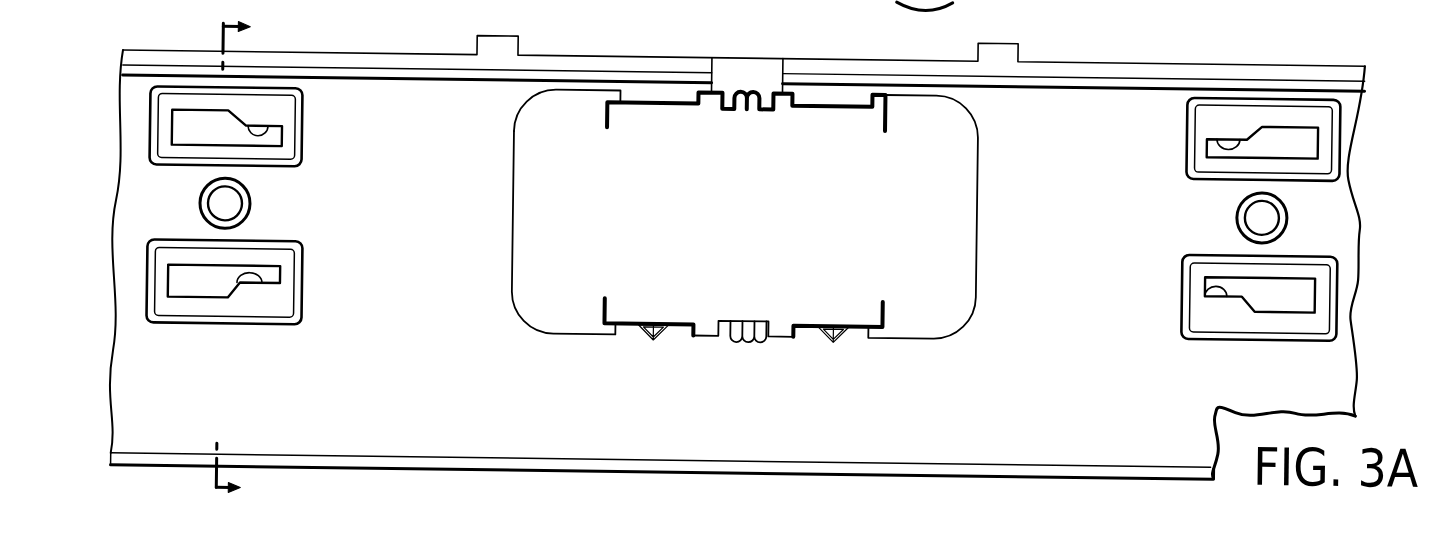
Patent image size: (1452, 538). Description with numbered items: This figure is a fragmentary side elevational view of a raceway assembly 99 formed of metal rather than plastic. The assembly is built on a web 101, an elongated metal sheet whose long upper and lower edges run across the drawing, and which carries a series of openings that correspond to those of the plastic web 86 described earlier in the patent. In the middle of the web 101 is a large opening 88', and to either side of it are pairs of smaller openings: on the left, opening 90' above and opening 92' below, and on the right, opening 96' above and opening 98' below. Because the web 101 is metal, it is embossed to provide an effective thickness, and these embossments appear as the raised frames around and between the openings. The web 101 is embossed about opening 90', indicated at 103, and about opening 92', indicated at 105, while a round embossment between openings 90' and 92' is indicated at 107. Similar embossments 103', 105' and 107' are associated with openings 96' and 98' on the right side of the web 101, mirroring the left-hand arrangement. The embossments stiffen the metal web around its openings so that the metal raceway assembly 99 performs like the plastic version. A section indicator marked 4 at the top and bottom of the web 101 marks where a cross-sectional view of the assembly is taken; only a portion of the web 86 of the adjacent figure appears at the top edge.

The raceway assembly 99 is at (1405, 160).
The web 101 is at (862, 427).
The section line 4- 4 is at (219, 256).
The opening 88' is at (714, 216).
The embossment 103 is at (248, 144).
The opening 90' is at (259, 116).
The embossment 107 is at (202, 200).
The embossment 105 is at (249, 296).
The opening 92' is at (232, 313).
The embossment 103' is at (1225, 146).
The opening 96' is at (1225, 130).
The embossment 107' is at (1232, 217).
The embossment 105' is at (1229, 315).
The opening 98' is at (1218, 292).
The web 86 is at (856, 0).